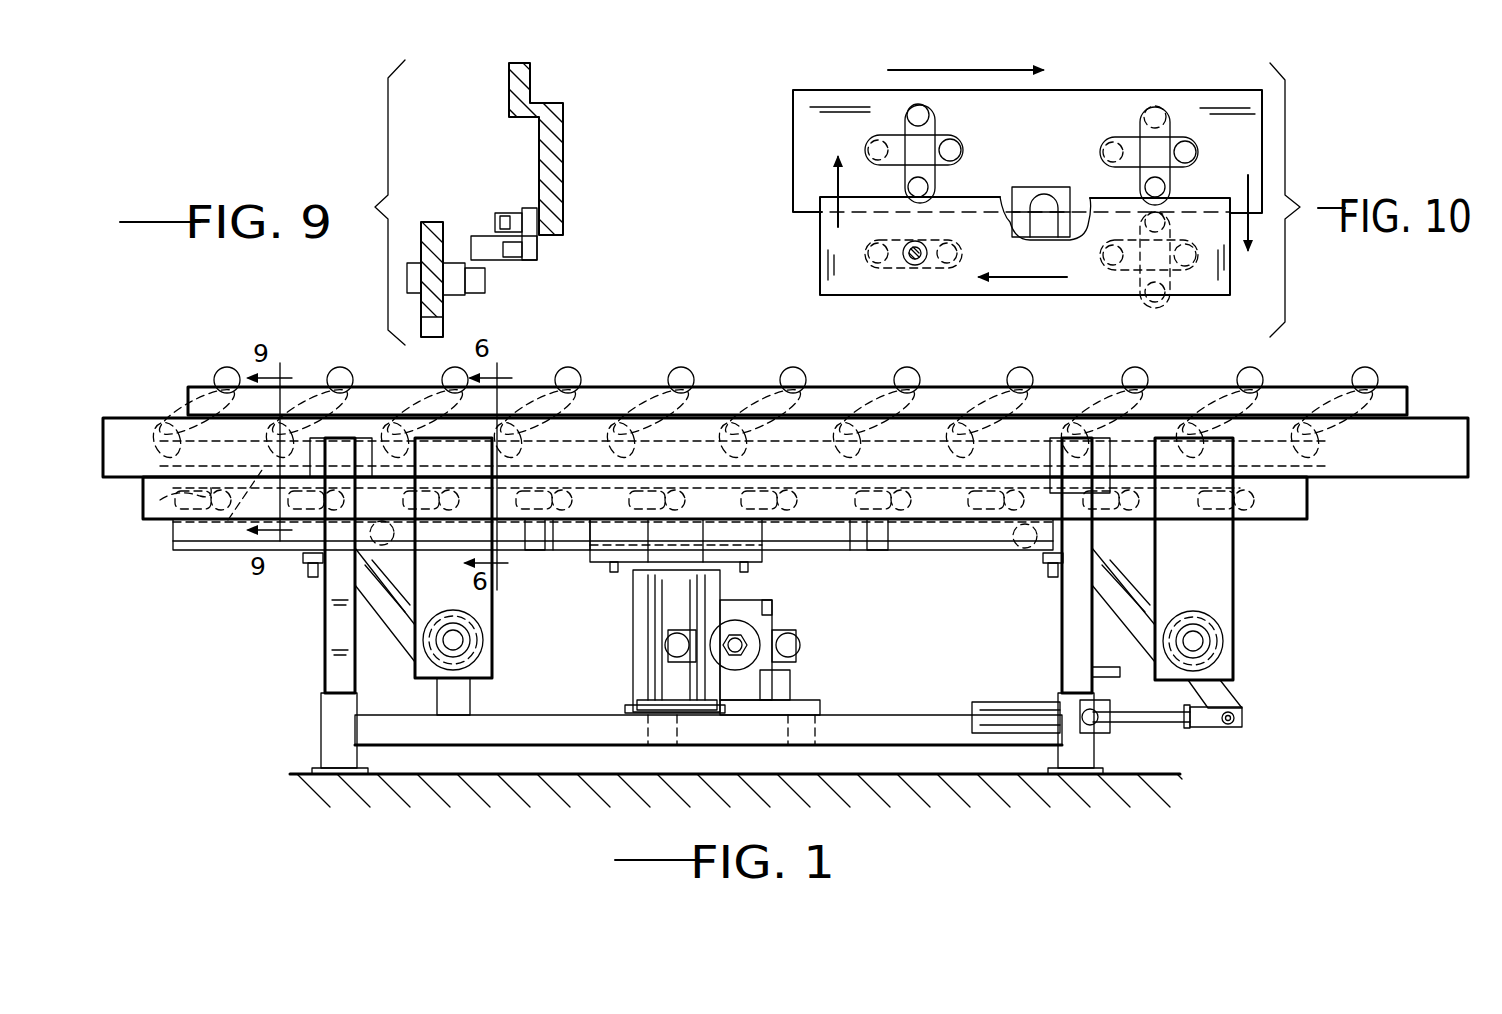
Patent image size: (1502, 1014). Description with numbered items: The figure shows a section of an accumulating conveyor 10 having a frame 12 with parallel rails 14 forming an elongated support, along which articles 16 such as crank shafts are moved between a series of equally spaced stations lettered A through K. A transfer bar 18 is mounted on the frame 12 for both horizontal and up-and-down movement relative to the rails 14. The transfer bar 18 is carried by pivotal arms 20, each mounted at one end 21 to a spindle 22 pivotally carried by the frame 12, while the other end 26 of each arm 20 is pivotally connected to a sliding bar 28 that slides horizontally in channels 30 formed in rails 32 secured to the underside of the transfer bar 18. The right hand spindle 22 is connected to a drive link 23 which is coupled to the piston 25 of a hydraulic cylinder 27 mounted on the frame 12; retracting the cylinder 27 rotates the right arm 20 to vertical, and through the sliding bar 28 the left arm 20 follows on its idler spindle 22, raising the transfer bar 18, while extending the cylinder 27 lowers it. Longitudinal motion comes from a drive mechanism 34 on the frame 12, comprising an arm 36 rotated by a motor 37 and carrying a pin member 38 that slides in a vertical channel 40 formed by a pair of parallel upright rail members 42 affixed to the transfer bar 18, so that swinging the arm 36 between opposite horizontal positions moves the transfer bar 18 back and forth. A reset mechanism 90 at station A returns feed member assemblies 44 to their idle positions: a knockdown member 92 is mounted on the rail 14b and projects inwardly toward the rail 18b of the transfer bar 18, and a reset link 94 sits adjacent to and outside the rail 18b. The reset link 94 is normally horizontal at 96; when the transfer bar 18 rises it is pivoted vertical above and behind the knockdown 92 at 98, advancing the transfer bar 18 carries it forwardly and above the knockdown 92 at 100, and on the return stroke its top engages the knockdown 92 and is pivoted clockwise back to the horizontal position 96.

In FIG. 1, the accumulating conveyor 10 is at (200, 643).
In FIG. 1, the frame 12 is at (323, 635).
In FIG. 1, the rails 14 is at (188, 398).
In FIG. 9, the rail 14b is at (563, 183).
In FIG. 1, the articles 16 is at (230, 367).
In FIG. 1, the transfer bar 18 is at (143, 500).
In FIG. 10, the transfer bar 18 is at (946, 295).
In FIG. 9, the rail 18b is at (431, 222).
In FIG. 1, the pivotal arms 20 is at (390, 598).
In FIG. 1, the arm end 21 is at (448, 650).
In FIG. 1, the spindle 22 is at (490, 640).
In FIG. 1, the drive link 23 is at (1235, 700).
In FIG. 1, the piston 25 is at (1148, 728).
In FIG. 1, the arm end 26 is at (325, 583).
In FIG. 1, the hydraulic cylinder 27 is at (1000, 702).
In FIG. 1, the sliding bar 28 is at (527, 541).
In FIG. 1, the channels 30 is at (985, 550).
In FIG. 1, the rails 32 is at (555, 550).
In FIG. 1, the drive mechanism 34 is at (812, 652).
In FIG. 1, the arm 36 is at (725, 625).
In FIG. 1, the motor 37 is at (775, 620).
In FIG. 1, the pin member 38 is at (668, 645).
In FIG. 1, the vertical channel 40 is at (680, 595).
In FIG. 1, the upright rail members 42 is at (635, 680).
In FIG. 1, the feed member assemblies 44 is at (195, 545).
In FIG. 1, the reset mechanism 90 is at (215, 550).
In FIG. 9, the knockdown member 92 is at (513, 262).
In FIG. 10, the knockdown member 92 is at (1060, 187).
In FIG. 9, the reset link 94 is at (478, 297).
In FIG. 10, the reset link 94 is at (926, 240).
In FIG. 10, the horizontal position 96 is at (866, 266).
In FIG. 10, the position above and behind knockdown 98 is at (942, 130).
In FIG. 10, the position forwardly and above knockdown 100 is at (1172, 108).